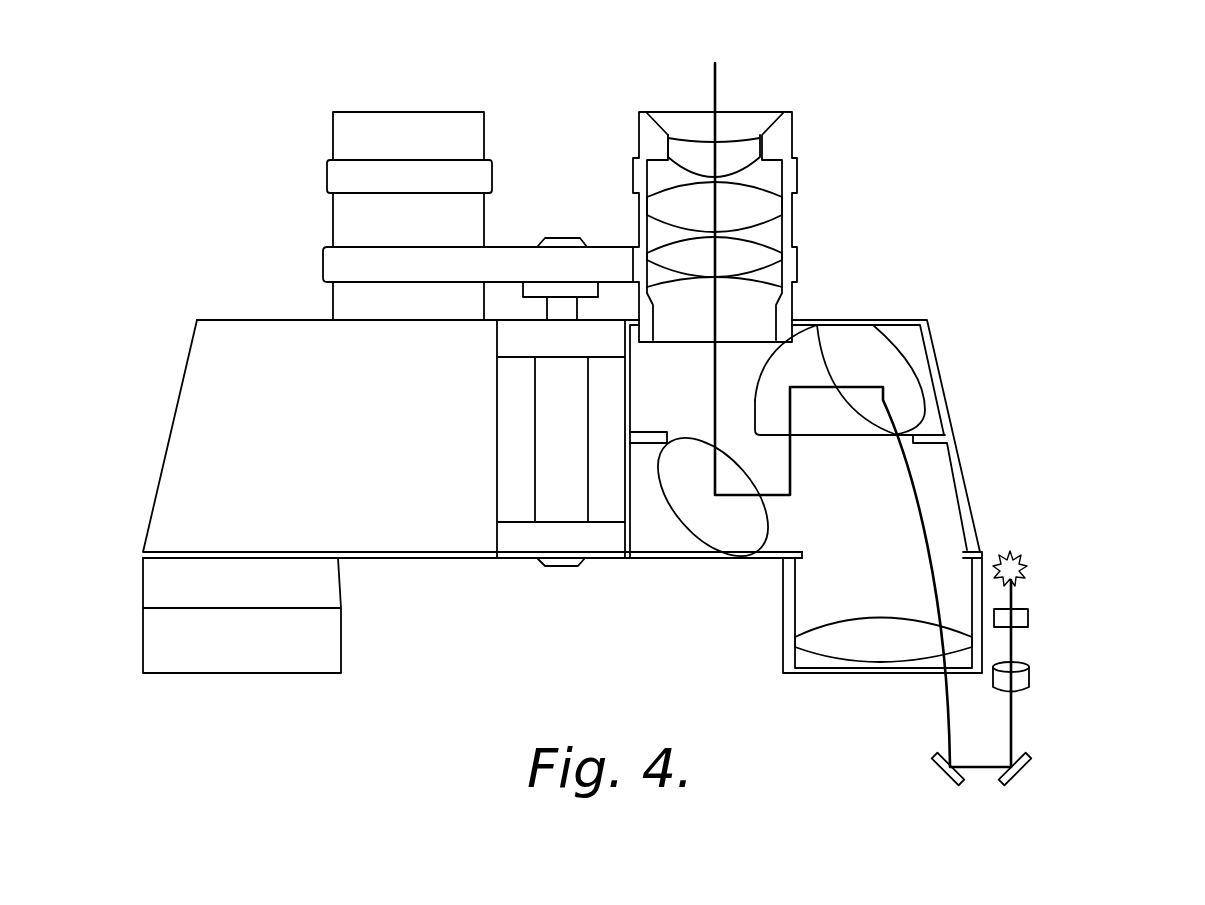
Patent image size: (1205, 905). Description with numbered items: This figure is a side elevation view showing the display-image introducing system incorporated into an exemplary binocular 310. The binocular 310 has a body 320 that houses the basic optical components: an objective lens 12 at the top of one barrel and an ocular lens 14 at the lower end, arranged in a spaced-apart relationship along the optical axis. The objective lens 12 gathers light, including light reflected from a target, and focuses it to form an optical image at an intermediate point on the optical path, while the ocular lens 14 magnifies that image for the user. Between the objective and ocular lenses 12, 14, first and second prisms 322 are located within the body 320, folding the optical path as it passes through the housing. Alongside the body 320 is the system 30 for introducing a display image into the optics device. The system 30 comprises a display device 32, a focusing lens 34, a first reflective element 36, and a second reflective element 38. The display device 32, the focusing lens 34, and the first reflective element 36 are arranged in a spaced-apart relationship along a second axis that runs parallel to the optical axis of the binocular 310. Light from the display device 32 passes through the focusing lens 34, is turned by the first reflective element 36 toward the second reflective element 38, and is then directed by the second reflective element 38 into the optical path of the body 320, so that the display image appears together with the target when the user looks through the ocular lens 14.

The objective lens 12 is at (732, 153).
The ocular lens 14 is at (847, 648).
The system 30 is at (1028, 798).
The display device 32 is at (1045, 583).
The focusing lens 34 is at (1028, 673).
The first reflective element 36 is at (1025, 768).
The second reflective element 38 is at (947, 768).
The binocular 310 is at (840, 142).
The body 320 is at (890, 323).
The first and second prisms 322 is at (930, 363).